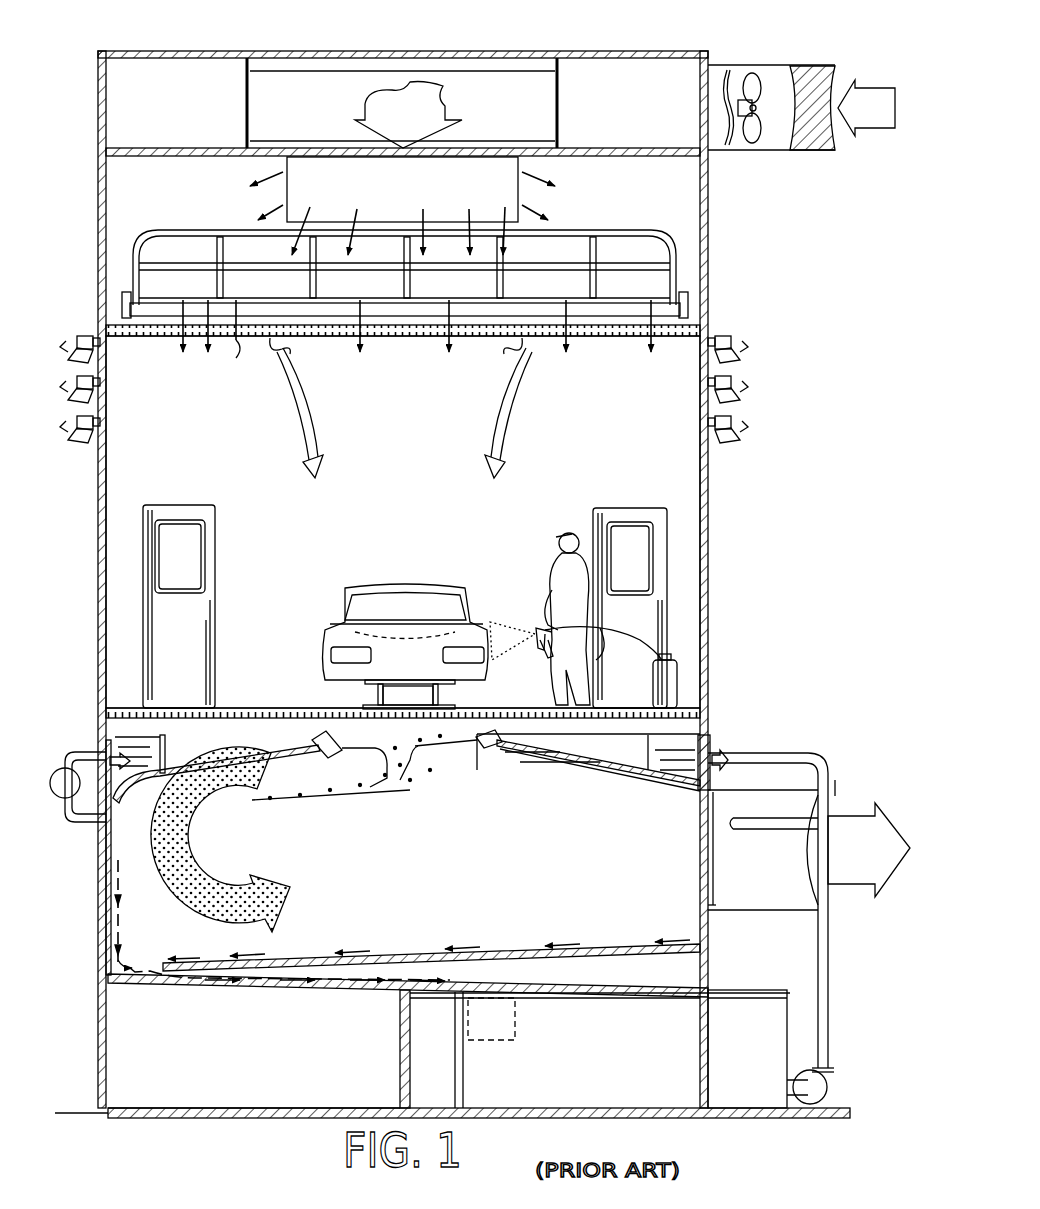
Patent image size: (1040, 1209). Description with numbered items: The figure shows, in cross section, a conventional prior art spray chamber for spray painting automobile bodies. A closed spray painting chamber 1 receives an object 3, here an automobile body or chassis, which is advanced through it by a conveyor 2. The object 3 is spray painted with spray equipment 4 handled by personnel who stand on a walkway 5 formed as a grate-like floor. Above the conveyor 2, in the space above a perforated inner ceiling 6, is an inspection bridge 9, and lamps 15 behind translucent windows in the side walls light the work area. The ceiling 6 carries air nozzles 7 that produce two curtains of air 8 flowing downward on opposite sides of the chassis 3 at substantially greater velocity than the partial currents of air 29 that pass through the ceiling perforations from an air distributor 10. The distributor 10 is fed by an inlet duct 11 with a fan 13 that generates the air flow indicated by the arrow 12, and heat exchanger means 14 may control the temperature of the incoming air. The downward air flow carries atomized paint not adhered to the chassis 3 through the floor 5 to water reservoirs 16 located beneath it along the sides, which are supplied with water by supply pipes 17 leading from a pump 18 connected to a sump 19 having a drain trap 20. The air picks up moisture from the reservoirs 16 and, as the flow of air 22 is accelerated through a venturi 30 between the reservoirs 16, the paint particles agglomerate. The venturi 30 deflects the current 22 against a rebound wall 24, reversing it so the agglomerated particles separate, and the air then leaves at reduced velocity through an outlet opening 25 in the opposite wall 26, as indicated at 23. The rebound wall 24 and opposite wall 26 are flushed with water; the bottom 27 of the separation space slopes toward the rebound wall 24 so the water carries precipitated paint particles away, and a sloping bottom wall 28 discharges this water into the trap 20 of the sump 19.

The spray painting chamber 1 is at (112, 522).
The conveyor 2 is at (445, 697).
The object 3 is at (403, 586).
The spray equipment 4 is at (522, 622).
The walkway 5 is at (240, 708).
The inner ceiling 6 is at (397, 339).
The air nozzles 7 is at (396, 358).
The curtains of air 8 is at (302, 420).
The inspection bridge 9 is at (597, 232).
The air distributor 10 is at (428, 200).
The inlet duct 11 is at (766, 66).
The arrow 12 is at (405, 92).
The fan 13 is at (757, 135).
The heat exchanger means 14 is at (730, 68).
The lamps 15 is at (75, 390).
The water reservoirs 16 is at (135, 752).
The supply pipes 17 is at (60, 760).
The pump 18 is at (828, 1084).
The sump 19 is at (768, 1033).
The drain trap 20 is at (512, 1006).
The flow of air 22 is at (195, 862).
The discharge 23 is at (853, 826).
The rebound wall 24 is at (118, 842).
The outlet opening 25 is at (702, 867).
The opposite wall 26 is at (694, 790).
The bottom 27 is at (302, 957).
The sloping bottom wall 28 is at (274, 995).
The partial currents of air 29 is at (238, 345).
The venturi 30 is at (410, 760).